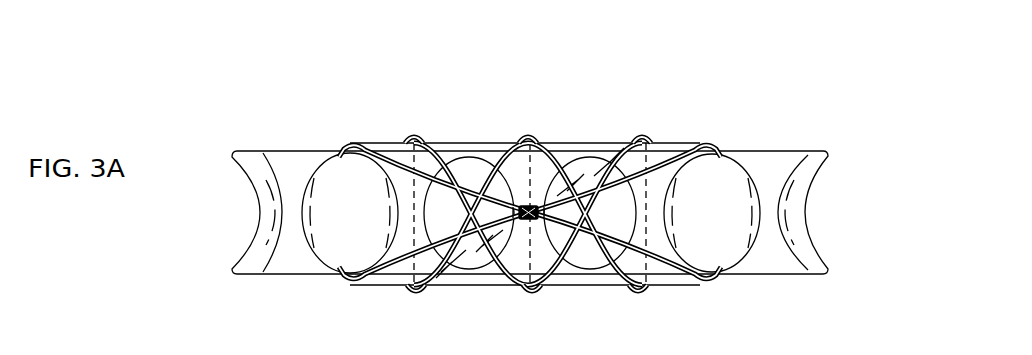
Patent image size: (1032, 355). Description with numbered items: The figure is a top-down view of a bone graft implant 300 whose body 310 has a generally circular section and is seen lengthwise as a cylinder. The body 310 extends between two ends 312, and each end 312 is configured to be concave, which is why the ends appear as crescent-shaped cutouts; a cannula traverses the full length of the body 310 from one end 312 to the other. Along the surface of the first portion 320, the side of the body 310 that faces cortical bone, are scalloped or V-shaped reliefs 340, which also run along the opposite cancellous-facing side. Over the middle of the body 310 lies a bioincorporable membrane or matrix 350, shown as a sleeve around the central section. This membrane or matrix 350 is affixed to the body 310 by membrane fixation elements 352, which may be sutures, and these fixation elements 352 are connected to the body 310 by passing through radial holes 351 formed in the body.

The bone graft implant 300 is at (860, 97).
The body 310 is at (302, 157).
The end 312 is at (252, 237).
The first portion 320 is at (255, 153).
The scalloped or V-shaped reliefs 340 is at (332, 168).
The bioincorporable membrane or matrix 350 is at (352, 145).
The radial holes 351 is at (412, 138).
The membrane fixation elements 352 is at (480, 163).